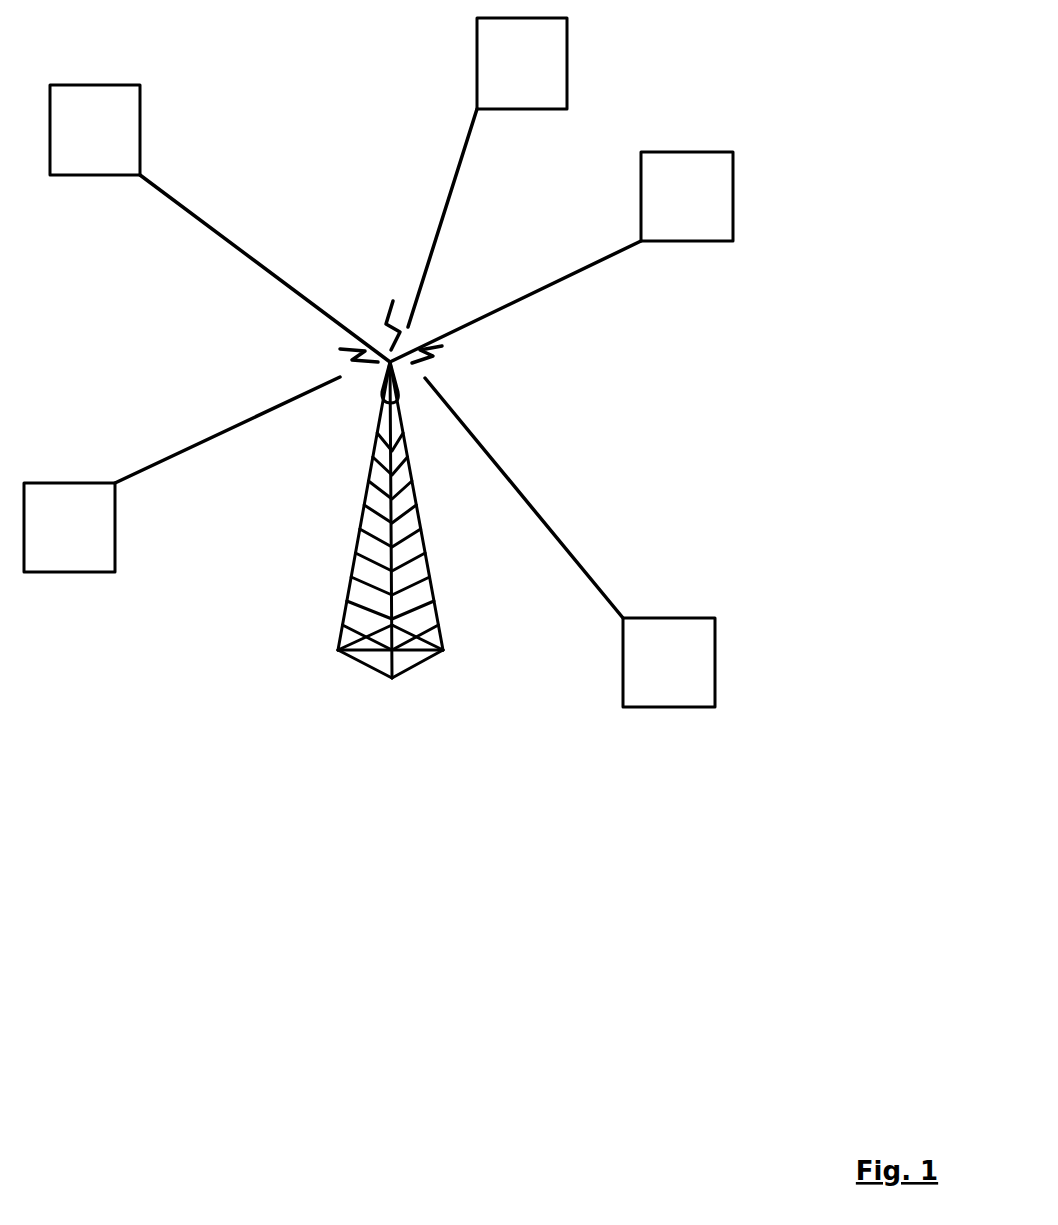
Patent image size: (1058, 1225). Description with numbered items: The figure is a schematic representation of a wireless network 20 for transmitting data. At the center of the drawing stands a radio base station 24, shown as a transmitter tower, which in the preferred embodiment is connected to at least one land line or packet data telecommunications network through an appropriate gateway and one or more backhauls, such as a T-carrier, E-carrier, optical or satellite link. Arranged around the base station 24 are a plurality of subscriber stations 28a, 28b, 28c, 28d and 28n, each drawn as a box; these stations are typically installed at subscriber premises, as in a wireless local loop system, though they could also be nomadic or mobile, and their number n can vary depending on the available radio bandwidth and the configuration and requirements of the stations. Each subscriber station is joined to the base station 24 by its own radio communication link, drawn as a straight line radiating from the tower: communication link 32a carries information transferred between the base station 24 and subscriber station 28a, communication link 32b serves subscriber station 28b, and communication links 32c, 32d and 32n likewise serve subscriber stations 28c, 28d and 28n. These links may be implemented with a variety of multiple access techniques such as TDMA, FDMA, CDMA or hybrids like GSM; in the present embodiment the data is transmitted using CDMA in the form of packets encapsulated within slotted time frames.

The wireless network 20 is at (268, 742).
The radio base station 24 is at (390, 504).
The subscriber station 28a is at (69, 527).
The subscriber station 28b is at (95, 130).
The subscriber station 28c is at (522, 63).
The subscriber station 28d is at (687, 196).
The subscriber station 28n is at (669, 662).
The communication link 32a is at (227, 430).
The communication link 32b is at (265, 268).
The communication link 32c is at (446, 218).
The communication link 32d is at (516, 301).
The communication link 32n is at (524, 498).